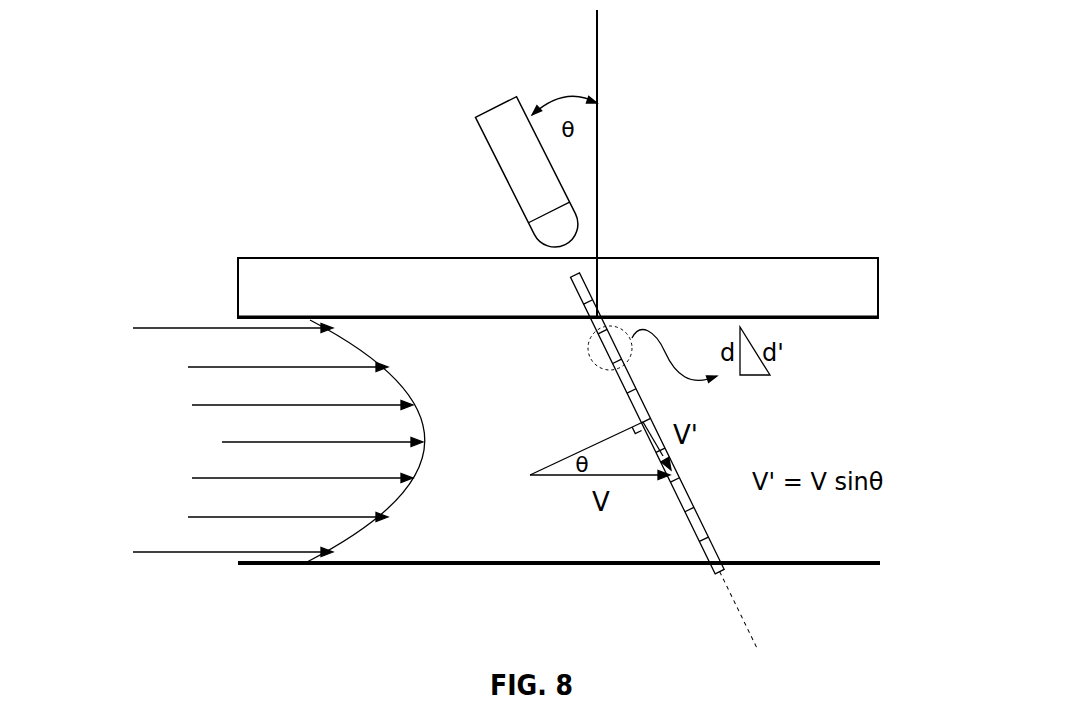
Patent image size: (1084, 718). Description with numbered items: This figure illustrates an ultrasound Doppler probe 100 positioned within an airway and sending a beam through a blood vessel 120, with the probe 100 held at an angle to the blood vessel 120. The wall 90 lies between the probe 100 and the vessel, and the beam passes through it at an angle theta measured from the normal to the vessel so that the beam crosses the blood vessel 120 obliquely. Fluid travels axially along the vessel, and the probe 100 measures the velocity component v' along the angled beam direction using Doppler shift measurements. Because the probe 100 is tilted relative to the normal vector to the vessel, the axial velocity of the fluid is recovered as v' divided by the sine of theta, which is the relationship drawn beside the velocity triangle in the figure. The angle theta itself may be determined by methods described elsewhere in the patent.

The pipe wall 90 is at (789, 230).
The pulsed wave ultrasound Doppler probe 100 is at (530, 176).
The blood vessel 120 is at (808, 543).